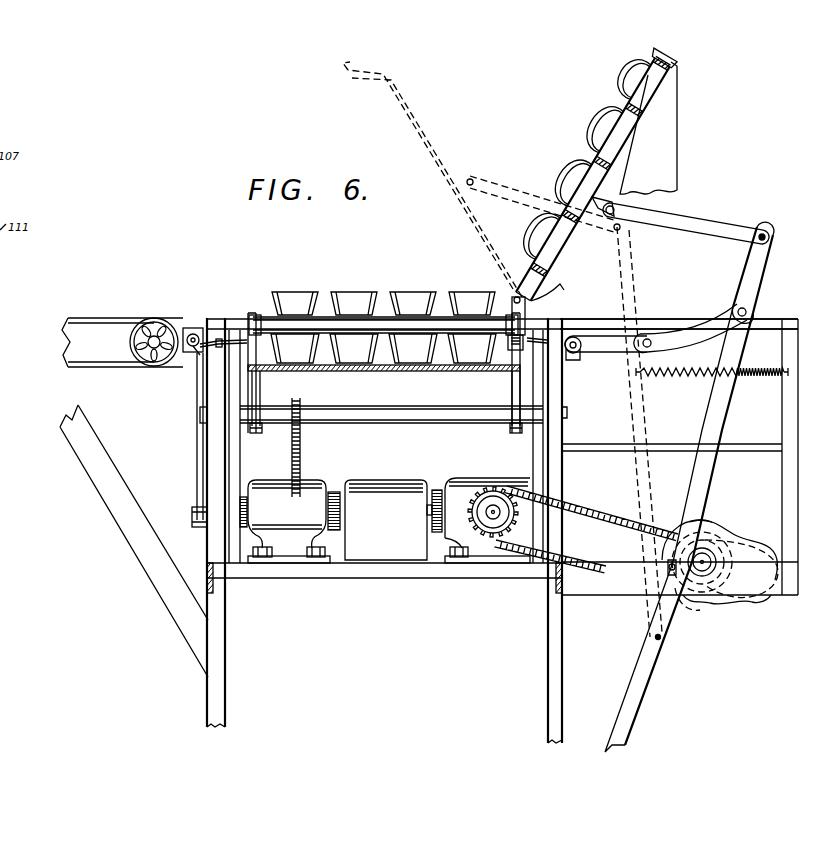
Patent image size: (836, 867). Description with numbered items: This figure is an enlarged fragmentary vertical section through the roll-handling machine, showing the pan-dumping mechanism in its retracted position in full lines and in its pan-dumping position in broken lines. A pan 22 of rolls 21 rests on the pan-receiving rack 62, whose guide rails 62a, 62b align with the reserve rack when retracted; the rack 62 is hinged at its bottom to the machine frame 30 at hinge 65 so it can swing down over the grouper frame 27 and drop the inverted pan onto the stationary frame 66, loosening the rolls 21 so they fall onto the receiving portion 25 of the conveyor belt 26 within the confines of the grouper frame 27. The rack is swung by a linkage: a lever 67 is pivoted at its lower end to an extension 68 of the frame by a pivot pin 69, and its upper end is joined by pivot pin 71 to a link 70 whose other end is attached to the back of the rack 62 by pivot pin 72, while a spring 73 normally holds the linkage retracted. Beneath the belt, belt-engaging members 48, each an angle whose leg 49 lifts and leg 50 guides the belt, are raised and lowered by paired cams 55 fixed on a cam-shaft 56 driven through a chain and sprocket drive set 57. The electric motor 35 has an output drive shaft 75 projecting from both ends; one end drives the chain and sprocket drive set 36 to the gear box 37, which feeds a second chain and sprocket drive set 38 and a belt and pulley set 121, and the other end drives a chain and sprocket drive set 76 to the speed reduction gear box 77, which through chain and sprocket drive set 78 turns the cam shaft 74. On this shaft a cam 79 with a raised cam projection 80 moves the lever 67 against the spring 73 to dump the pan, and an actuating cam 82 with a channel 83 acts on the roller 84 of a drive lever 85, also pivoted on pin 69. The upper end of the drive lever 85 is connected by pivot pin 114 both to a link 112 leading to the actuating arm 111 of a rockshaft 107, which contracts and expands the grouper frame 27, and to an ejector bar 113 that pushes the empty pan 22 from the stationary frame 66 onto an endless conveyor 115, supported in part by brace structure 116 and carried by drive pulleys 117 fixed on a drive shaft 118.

The rolls 21 is at (350, 355).
The pans 22 is at (287, 307).
The receiving portion 25 is at (327, 355).
The conveyor belt 26 is at (393, 353).
The grouper frame 27 is at (325, 335).
The machine frame 30 is at (560, 640).
The electric motor 35 is at (376, 548).
The chain and sprocket drive set 36 is at (332, 485).
The gear box 37 is at (268, 548).
The second chain and sprocket drive set 38 is at (245, 480).
The belt-engaging members 48 is at (264, 378).
The leg 49 is at (262, 384).
The leg 50 is at (247, 363).
The cams 55 is at (255, 433).
The cam-shaft 56 is at (436, 415).
The chain and sprocket drive set 57 is at (301, 441).
The pan-receiving rack 62 is at (657, 137).
The guide rail 62a is at (668, 72).
The guide rail 62b is at (562, 278).
The hinge 65 is at (543, 298).
The stationary frame 66 is at (440, 322).
The lever 67 is at (762, 270).
The extension 68 is at (783, 478).
The pivot pin 69 is at (660, 638).
The link 70 is at (722, 222).
The pivot pin 71 is at (764, 237).
The pivot pin 72 is at (614, 210).
The spring 73 is at (678, 374).
The cam shaft 74 is at (706, 558).
The output drive shaft 75 is at (426, 512).
The chain and sprocket drive set 76 is at (436, 485).
The speed reduction gear box 77 is at (470, 478).
The chain and sprocket drive set 78 is at (582, 503).
The cam 79 is at (732, 542).
The cam projection 80 is at (697, 608).
The actuating cam 82 is at (751, 600).
The channel 83 is at (704, 528).
The roller 84 is at (668, 567).
The drive lever 85 is at (712, 430).
The rockshafts 107 is at (194, 333).
The actuating arm 111 is at (607, 345).
The link 112 is at (680, 335).
The ejector bar 113 is at (656, 312).
The pivot pin 114 is at (748, 312).
The endless conveyor 115 is at (118, 318).
The brace structure 116 is at (118, 528).
The drive pulleys 117 is at (148, 344).
The drive shaft 118 is at (154, 338).
The belt and pulley set 121 is at (197, 455).